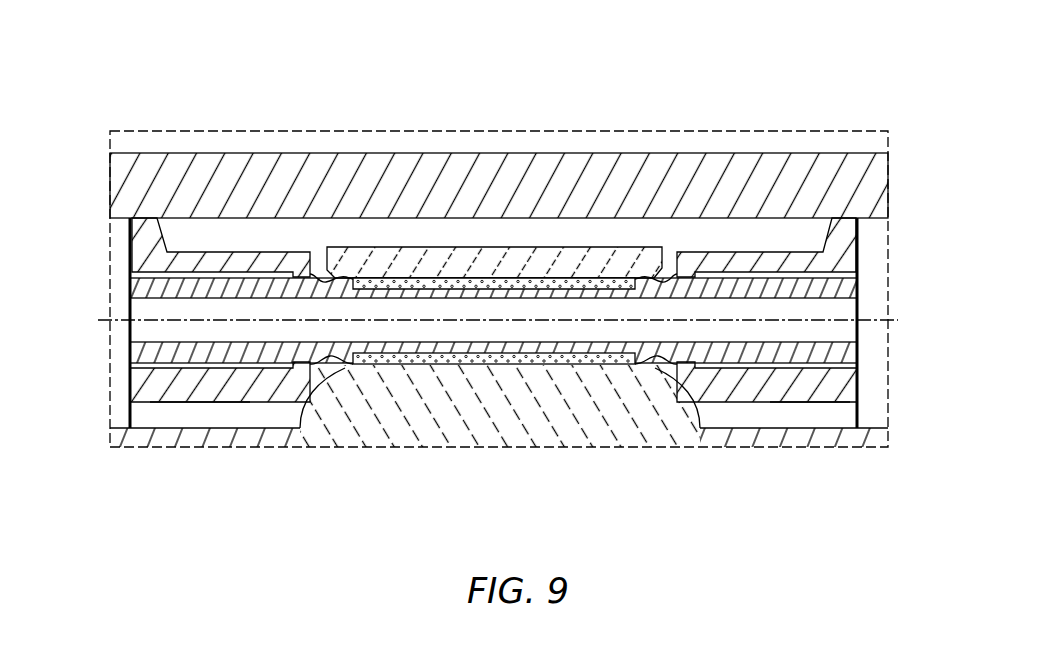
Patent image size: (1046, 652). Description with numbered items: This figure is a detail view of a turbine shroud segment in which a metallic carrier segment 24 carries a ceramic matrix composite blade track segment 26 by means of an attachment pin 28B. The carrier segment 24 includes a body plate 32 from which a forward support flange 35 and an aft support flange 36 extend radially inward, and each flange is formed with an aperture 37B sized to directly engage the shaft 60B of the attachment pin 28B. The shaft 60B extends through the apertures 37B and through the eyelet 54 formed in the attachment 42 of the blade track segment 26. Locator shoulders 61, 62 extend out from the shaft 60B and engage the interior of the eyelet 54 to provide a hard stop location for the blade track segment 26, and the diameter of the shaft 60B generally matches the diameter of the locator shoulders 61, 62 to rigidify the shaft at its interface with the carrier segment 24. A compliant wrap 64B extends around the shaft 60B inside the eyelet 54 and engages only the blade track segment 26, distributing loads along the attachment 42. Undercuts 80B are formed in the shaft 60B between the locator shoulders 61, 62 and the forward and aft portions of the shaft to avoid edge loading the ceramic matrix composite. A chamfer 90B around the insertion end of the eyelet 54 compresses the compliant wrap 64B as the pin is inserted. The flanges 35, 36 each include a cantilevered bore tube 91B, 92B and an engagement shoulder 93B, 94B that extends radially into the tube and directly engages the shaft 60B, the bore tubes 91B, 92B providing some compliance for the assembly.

The carrier segment 24 is at (778, 135).
The body plate 32 is at (641, 137).
The forward support flange 35 is at (128, 251).
The aft support flange 36 is at (879, 248).
The apertures 37B is at (295, 281).
The attachment 42 is at (494, 229).
The locator shoulder 61 is at (399, 264).
The eyelet 54 is at (472, 279).
The locator shoulder 62 is at (585, 261).
The shaft 60B is at (172, 323).
The attachment pin 28B is at (878, 351).
The engagement shoulder 93B is at (274, 369).
The engagement shoulder 94B is at (713, 369).
The cantilevered bore tube 91B is at (199, 421).
The cantilevered bore tube 92B is at (821, 421).
The chamfer 90B is at (300, 428).
The undercut 80B is at (358, 372).
The compliant wrap 64B is at (485, 384).
The blade track segment 26 is at (759, 458).